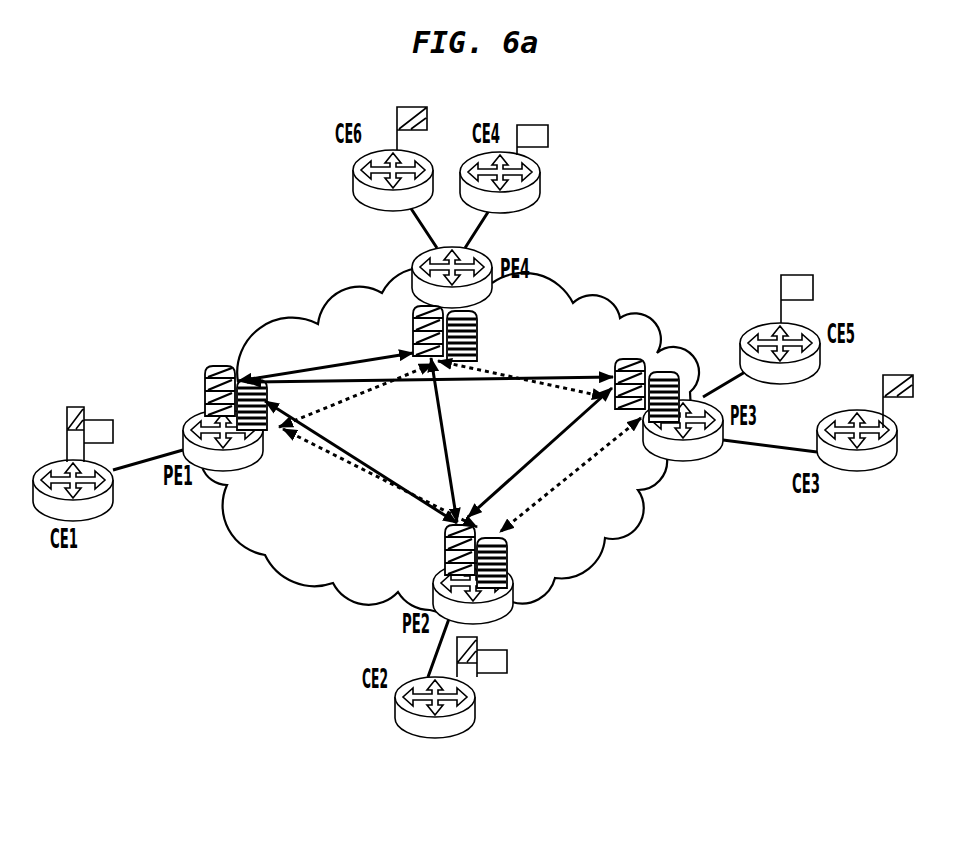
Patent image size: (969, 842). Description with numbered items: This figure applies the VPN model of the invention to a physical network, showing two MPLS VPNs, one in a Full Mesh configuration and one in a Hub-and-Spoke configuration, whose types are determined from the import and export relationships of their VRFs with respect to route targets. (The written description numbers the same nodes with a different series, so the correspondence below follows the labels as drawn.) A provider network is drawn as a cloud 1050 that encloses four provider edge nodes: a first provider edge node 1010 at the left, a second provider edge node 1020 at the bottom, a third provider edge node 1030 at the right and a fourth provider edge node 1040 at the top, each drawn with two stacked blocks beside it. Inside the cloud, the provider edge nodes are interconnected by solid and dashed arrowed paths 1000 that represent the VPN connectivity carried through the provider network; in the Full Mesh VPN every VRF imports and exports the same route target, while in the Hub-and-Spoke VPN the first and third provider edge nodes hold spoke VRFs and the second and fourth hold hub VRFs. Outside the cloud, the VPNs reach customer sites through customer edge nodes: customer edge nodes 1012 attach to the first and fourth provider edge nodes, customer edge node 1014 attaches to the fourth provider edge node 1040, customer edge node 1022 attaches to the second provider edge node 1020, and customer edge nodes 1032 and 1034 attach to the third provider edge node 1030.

The full mesh of pseudowire tunnels between provider edge routers 1000 is at (446, 442).
The provider edge router PE1 1010 is at (191, 414).
The customer edge router 1012 is at (540, 203).
The customer edge router CE6 1014 is at (362, 205).
The provider edge router PE2 1020 is at (500, 617).
The customer edge router CE2 1022 is at (463, 733).
The provider edge router PE3 1030 is at (703, 458).
The customer edge router CE5 1032 is at (752, 328).
The customer edge router CE3 1034 is at (850, 472).
The provider edge router PE4 1040 is at (489, 255).
The provider network cloud 1050 is at (622, 522).